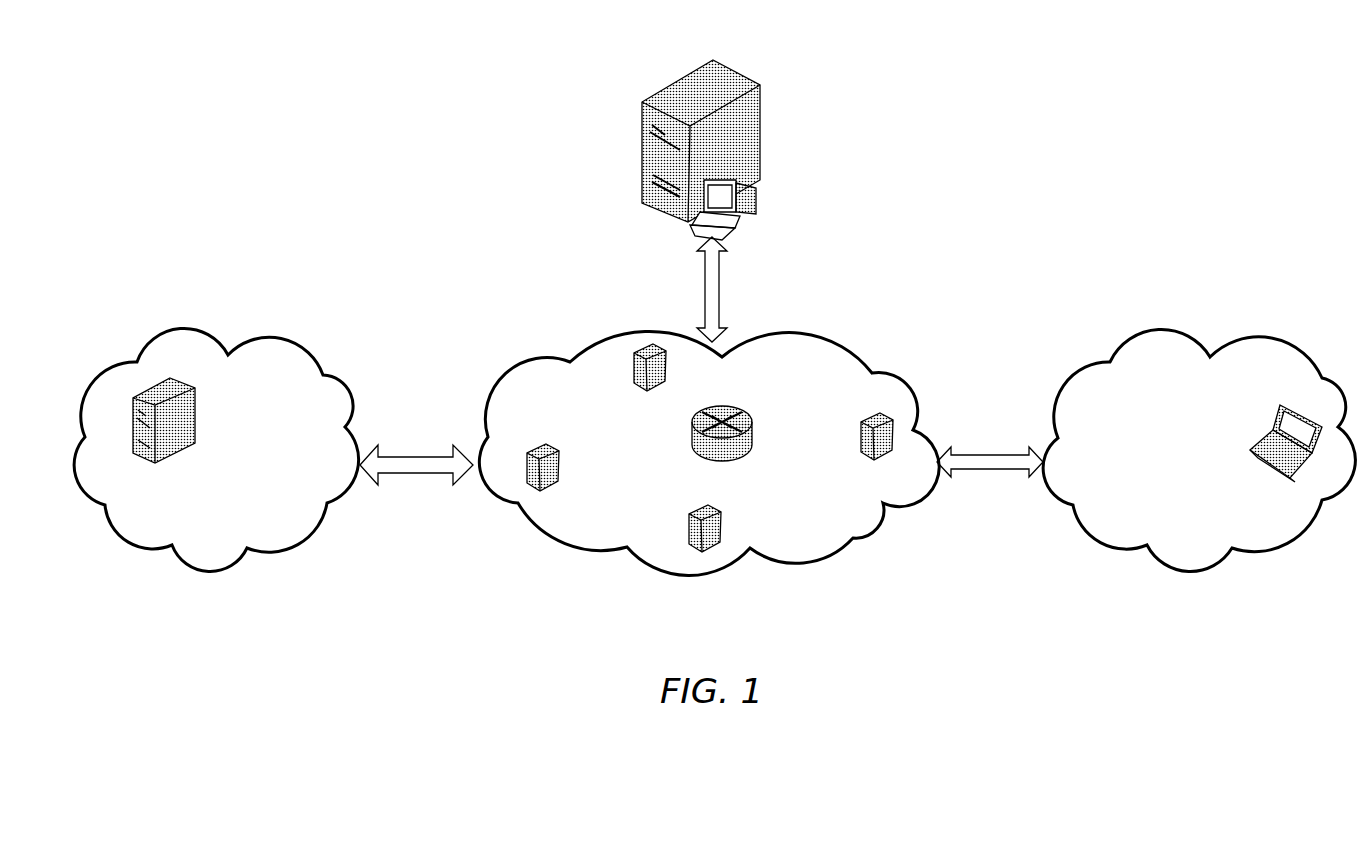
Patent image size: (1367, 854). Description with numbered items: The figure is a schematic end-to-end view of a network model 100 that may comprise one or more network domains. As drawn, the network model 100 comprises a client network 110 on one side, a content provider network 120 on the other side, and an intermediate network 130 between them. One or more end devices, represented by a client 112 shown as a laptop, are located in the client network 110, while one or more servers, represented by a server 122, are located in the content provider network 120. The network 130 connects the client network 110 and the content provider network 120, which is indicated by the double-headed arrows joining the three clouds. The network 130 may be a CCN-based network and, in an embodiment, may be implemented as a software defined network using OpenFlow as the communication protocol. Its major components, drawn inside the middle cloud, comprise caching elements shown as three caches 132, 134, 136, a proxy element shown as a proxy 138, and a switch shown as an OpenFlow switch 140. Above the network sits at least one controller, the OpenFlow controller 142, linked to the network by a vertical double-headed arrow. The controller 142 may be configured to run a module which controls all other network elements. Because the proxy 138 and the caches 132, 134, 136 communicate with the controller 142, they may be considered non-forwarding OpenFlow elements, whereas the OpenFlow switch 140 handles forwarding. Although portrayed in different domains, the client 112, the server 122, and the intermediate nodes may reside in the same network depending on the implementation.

The network model 100 is at (292, 126).
The client network 110 is at (1177, 325).
The client 112 is at (1275, 430).
The content provider network 120 is at (320, 366).
The server 122 is at (195, 417).
The intermediate network 130 is at (835, 338).
The cache 132 is at (633, 364).
The cache 134 is at (560, 467).
The cache 136 is at (723, 527).
The proxy 138 is at (860, 437).
The OpenFlow switch 140 is at (752, 422).
The OpenFlow controller 142 is at (760, 146).